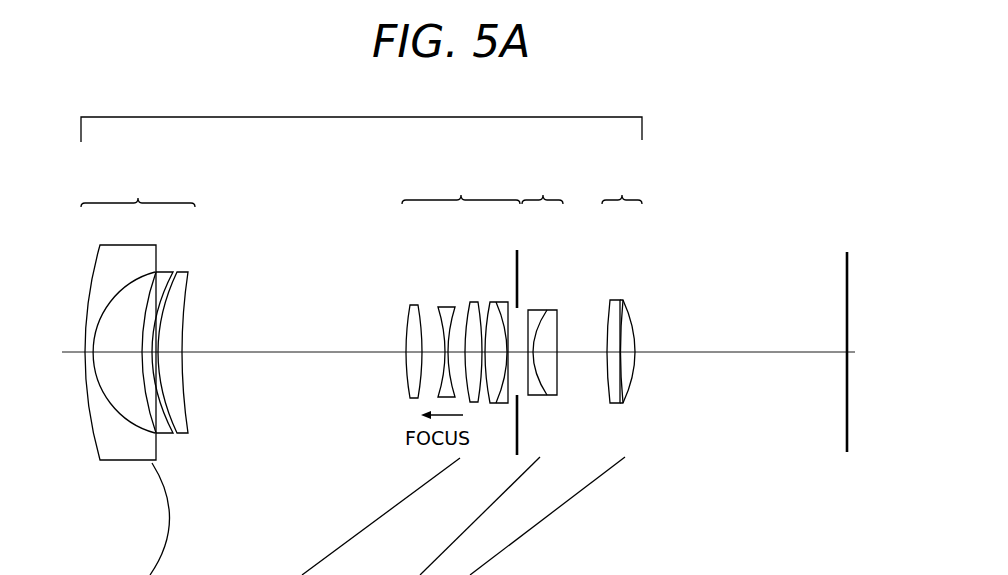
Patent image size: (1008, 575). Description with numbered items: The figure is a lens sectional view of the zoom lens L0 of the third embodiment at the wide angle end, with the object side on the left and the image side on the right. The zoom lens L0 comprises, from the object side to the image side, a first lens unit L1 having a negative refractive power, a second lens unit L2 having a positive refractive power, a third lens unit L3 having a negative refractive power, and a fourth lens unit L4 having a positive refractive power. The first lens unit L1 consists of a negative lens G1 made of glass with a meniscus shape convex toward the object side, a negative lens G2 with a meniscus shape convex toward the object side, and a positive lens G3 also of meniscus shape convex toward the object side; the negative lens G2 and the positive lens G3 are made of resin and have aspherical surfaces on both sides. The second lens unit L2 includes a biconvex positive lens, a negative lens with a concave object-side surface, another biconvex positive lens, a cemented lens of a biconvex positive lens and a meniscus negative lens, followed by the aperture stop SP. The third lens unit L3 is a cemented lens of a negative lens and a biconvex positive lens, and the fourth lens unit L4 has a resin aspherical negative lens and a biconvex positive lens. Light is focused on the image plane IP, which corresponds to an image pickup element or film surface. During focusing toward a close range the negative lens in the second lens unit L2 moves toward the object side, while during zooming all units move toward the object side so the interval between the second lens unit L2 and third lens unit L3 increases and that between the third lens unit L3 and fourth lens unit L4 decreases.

The zoom lens L0 is at (361, 116).
The first lens unit L1 is at (138, 187).
The second lens unit L2 is at (461, 284).
The third lens unit L3 is at (542, 280).
The fourth lens unit L4 is at (622, 284).
The negative lens G1 is at (98, 282).
The negative lens G2 is at (163, 278).
The positive lens G3 is at (178, 308).
The aperture stop SP is at (528, 274).
The image plane IP is at (830, 281).